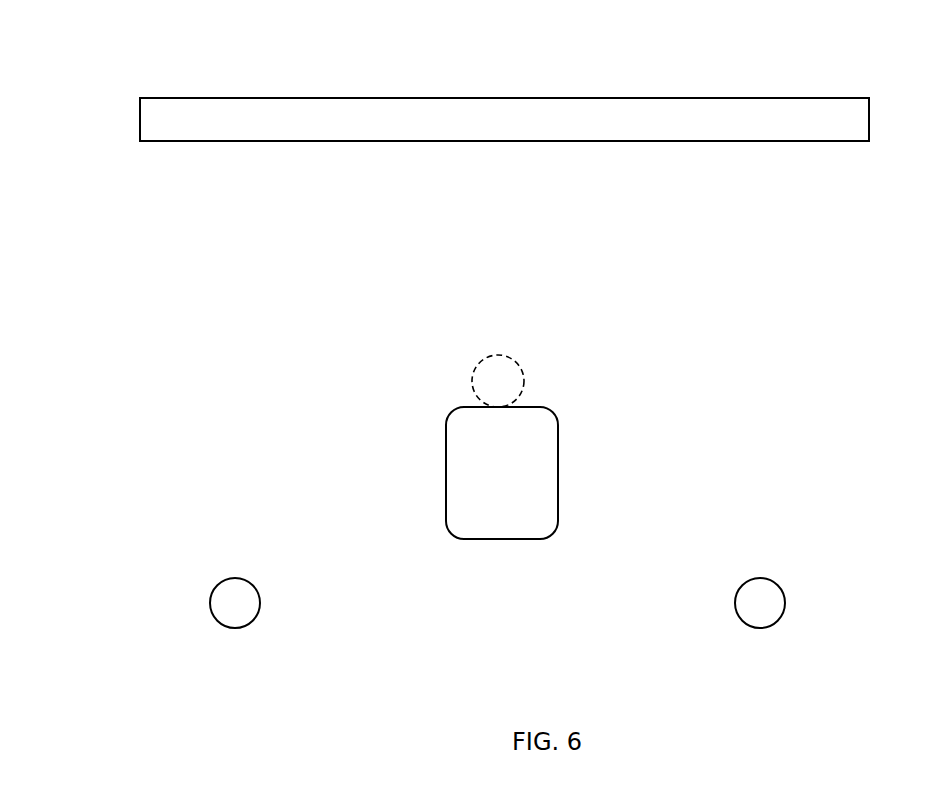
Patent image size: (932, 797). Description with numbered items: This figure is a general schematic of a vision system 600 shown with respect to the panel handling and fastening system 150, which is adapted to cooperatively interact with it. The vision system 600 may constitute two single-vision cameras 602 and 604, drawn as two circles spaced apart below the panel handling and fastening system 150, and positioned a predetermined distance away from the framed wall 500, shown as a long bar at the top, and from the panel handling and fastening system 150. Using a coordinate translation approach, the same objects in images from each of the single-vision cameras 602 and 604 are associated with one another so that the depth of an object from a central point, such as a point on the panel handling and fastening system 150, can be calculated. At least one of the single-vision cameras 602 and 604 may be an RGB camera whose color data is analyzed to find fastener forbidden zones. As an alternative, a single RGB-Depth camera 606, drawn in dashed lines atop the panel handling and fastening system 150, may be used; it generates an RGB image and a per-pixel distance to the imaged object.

The framed wall 500 is at (185, 80).
The panel handling and fastening system 150 is at (441, 451).
The RGB-Depth camera 606 is at (523, 382).
The vision system 600 is at (192, 560).
The single-vision camera 602 is at (212, 612).
The single-vision camera 604 is at (782, 590).